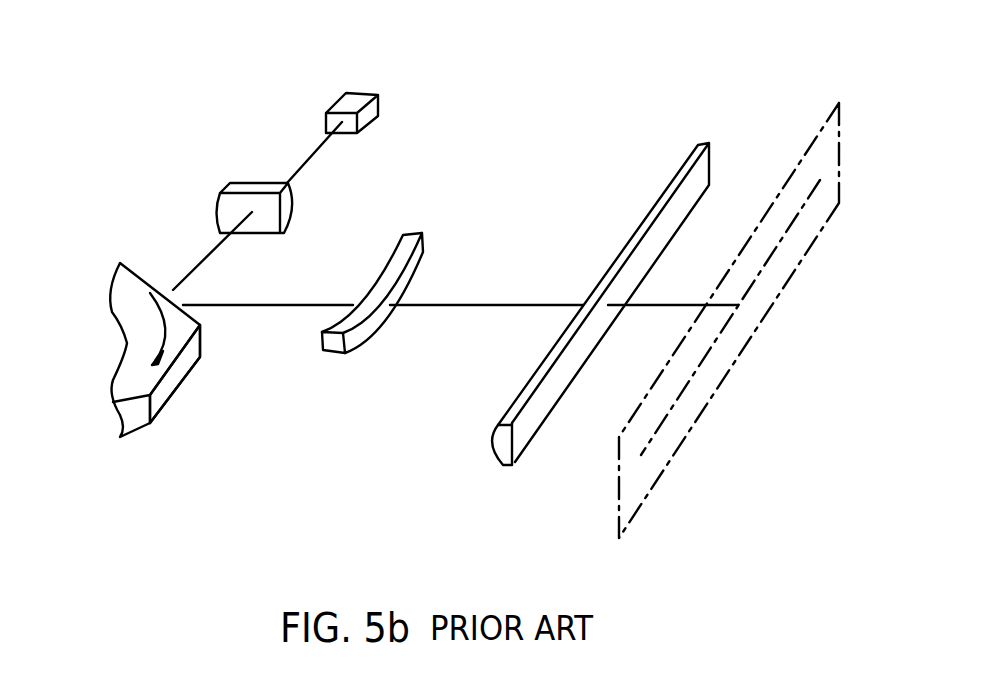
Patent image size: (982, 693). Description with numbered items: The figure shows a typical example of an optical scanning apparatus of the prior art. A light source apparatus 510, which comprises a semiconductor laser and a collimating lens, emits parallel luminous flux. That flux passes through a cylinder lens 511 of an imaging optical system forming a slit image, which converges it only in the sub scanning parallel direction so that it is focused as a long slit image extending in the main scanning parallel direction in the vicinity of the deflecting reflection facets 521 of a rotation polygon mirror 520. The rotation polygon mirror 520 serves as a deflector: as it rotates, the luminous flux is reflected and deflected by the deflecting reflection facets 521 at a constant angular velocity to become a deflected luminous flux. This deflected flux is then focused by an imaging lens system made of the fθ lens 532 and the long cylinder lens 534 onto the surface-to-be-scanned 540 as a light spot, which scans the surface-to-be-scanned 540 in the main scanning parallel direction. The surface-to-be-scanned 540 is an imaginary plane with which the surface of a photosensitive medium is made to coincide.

The light source apparatus 510 is at (362, 92).
The cylinder lens 511 is at (251, 183).
The rotation polygon mirror 520 is at (140, 283).
The deflecting reflection facet 521 is at (170, 383).
The fθ lens 532 is at (410, 232).
The long cylinder lens 534 is at (707, 143).
The surface-to-be-scanned 540 is at (700, 417).